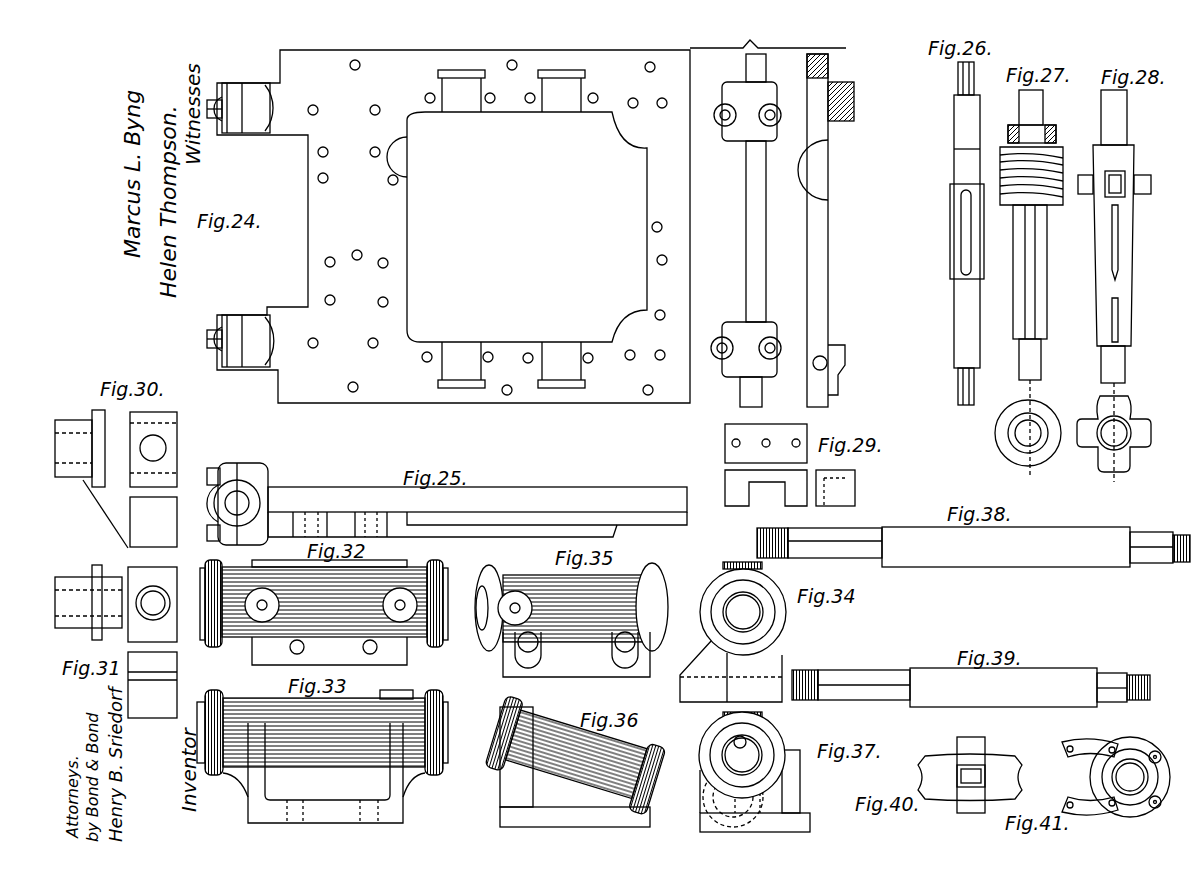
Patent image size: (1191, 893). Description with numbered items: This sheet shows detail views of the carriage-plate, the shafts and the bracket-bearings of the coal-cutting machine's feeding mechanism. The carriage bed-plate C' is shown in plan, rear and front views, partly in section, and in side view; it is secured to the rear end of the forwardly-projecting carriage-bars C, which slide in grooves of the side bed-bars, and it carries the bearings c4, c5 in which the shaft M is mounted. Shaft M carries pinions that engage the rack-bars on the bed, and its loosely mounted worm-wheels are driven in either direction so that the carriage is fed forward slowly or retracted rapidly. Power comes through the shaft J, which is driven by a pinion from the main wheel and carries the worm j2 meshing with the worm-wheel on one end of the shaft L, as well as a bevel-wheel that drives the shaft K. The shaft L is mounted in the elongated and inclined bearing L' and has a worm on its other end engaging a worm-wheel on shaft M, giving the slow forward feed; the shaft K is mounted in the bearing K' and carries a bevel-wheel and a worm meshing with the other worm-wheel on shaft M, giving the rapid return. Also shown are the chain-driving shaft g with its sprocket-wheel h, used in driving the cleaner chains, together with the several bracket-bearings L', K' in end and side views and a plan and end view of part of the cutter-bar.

In FIG. 24, the carriage bed-plate C' is at (453, 226).
In FIG. 25, the carriage bed-plate C' is at (447, 504).
In FIG. 24, the bearing c4 is at (256, 214).
In FIG. 24, the bearing c5 is at (219, 224).
In FIG. 29, the carriage-bar C is at (782, 230).
In FIG. 26, the shaft M is at (958, 233).
In FIG. 27, the shaft J is at (1029, 282).
In FIG. 27, the worm j2 is at (1060, 182).
In FIG. 28, the chain-driving shaft g is at (1118, 286).
In FIG. 28, the sprocket-wheel h is at (1127, 184).
In FIG. 32, the bearing L' is at (324, 612).
In FIG. 33, the bearing L' is at (322, 756).
In FIG. 34, the bearing L' is at (744, 632).
In FIG. 35, the bearing K' is at (571, 612).
In FIG. 36, the bearing K' is at (576, 761).
In FIG. 37, the bearing K' is at (762, 772).
In FIG. 38, the shaft L is at (973, 547).
In FIG. 39, the shaft K is at (971, 687).